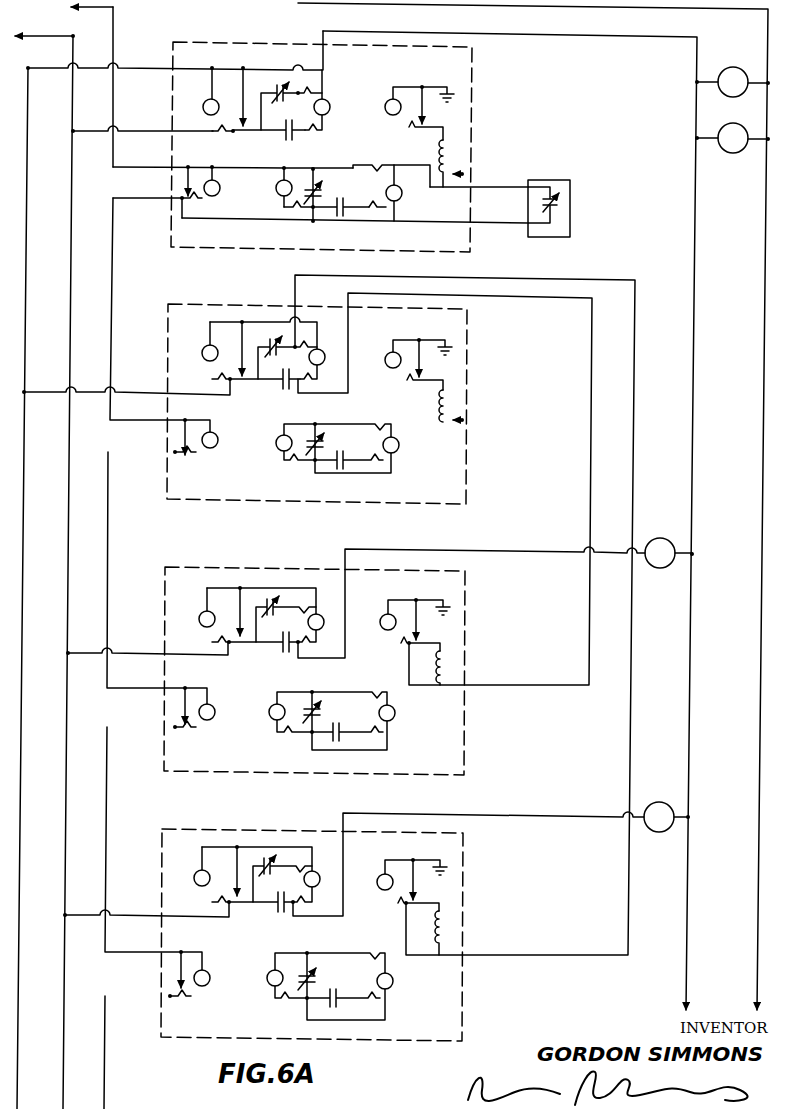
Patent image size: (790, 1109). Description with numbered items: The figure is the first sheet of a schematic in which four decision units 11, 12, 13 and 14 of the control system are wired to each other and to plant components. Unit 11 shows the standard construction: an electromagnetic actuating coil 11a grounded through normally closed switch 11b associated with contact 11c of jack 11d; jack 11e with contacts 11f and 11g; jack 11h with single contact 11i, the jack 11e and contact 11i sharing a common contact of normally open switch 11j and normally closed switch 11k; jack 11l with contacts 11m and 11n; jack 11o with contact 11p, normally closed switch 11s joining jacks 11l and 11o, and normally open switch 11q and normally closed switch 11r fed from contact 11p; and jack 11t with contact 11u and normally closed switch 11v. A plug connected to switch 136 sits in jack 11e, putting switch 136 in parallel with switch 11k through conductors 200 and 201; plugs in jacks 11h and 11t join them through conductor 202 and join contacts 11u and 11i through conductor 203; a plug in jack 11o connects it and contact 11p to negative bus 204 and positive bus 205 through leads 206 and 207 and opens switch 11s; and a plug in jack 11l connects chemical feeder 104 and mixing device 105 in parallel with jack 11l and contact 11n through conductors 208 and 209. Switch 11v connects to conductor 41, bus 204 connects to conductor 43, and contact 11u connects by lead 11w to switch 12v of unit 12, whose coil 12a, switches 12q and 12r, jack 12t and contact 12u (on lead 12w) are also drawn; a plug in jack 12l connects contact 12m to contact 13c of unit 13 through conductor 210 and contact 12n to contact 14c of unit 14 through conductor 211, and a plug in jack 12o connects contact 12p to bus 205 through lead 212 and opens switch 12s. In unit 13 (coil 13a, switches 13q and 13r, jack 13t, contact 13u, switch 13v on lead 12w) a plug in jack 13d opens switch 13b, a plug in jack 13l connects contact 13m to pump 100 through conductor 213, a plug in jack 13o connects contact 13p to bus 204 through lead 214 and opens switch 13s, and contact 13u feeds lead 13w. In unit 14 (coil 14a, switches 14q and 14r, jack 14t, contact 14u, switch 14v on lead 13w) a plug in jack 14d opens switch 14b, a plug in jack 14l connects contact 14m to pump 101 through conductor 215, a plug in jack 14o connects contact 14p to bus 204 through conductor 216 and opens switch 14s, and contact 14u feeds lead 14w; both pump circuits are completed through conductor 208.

The decision unit 11 is at (246, 42).
The decision unit 12 is at (223, 305).
The decision unit 13 is at (238, 566).
The decision unit 14 is at (237, 828).
The conductor 41 is at (92, 87).
The conductor 43 is at (43, 37).
The pump 100 is at (668, 553).
The pump 101 is at (666, 817).
The chemical feeder 104 is at (733, 82).
The mixing device 105 is at (733, 138).
The switch 136 is at (572, 209).
The conductor 200 is at (497, 226).
The conductor 201 is at (496, 187).
The conductor 202 is at (239, 168).
The conductor 203 is at (222, 228).
The negative power supply bus 204 is at (70, 293).
The positive power supply bus 205 is at (26, 234).
The lead 206 is at (140, 130).
The lead 207 is at (140, 67).
The conductor 208 is at (512, 44).
The conductor 209 is at (400, 12).
The conductor 210 is at (349, 324).
The conductor 211 is at (297, 292).
The lead 212 is at (133, 392).
The conductor 213 is at (322, 660).
The lead 214 is at (135, 652).
The conductor 215 is at (315, 919).
The conductor 216 is at (132, 914).
The electromagnetic actuating coil 11a is at (450, 154).
The normally closed switch 11b is at (427, 110).
The contact 11c is at (415, 131).
The jack 11d is at (385, 107).
The jack 11e is at (402, 196).
The contact 11f is at (374, 227).
The contact 11g is at (385, 167).
The jack 11h is at (277, 184).
The contact 11i is at (288, 209).
The normally open switch 11j is at (348, 208).
The normally closed switch 11k is at (323, 191).
The jack 11l is at (330, 107).
The contact 11m is at (320, 134).
The contact 11n is at (315, 94).
The jack 11o is at (203, 107).
The contact 11p is at (213, 130).
The normally open switch 11q is at (286, 142).
The normally closed switch 11r is at (280, 110).
The normally closed switch 11s is at (240, 88).
The jack 11t is at (220, 188).
The contact 11u is at (196, 202).
The normally closed switch 11v is at (184, 185).
The lead 11w is at (122, 272).
The electromagnetic actuating coil 12a is at (439, 410).
The jack 12l is at (309, 360).
The contact 12m is at (316, 383).
The contact 12n is at (306, 346).
The jack 12o is at (200, 350).
The contact 12p is at (212, 382).
The normally open switch 12q is at (288, 392).
The normally closed switch 12r is at (274, 337).
The normally closed switch 12s is at (239, 340).
The jack 12t is at (218, 440).
The contact 12u is at (201, 457).
The normally closed switch 12v is at (184, 440).
The lead 12w is at (118, 542).
The electromagnetic actuating coil 13a is at (450, 665).
The normally closed switch 13b is at (422, 622).
The contact 13c is at (399, 646).
The jack 13d is at (382, 612).
The jack 13l is at (322, 616).
The contact 13m is at (312, 648).
The jack 13o is at (198, 611).
The contact 13p is at (207, 646).
The normally open switch 13q is at (286, 654).
The normally closed switch 13r is at (273, 594).
The normally closed switch 13s is at (237, 605).
The jack 13t is at (215, 712).
The contact 13u is at (196, 732).
The normally closed switch 13v is at (182, 709).
The lead 13w is at (113, 805).
The electromagnetic actuating coil 14a is at (449, 930).
The normally closed switch 14b is at (419, 882).
The contact 14c is at (396, 908).
The jack 14d is at (378, 876).
The jack 14l is at (319, 871).
The contact 14m is at (308, 908).
The jack 14o is at (195, 870).
The contact 14p is at (205, 906).
The normally open switch 14q is at (278, 914).
The normally closed switch 14r is at (269, 854).
The normally closed switch 14s is at (233, 867).
The jack 14t is at (210, 976).
The contact 14u is at (201, 999).
The normally closed switch 14v is at (178, 976).
The lead 14w is at (112, 1063).